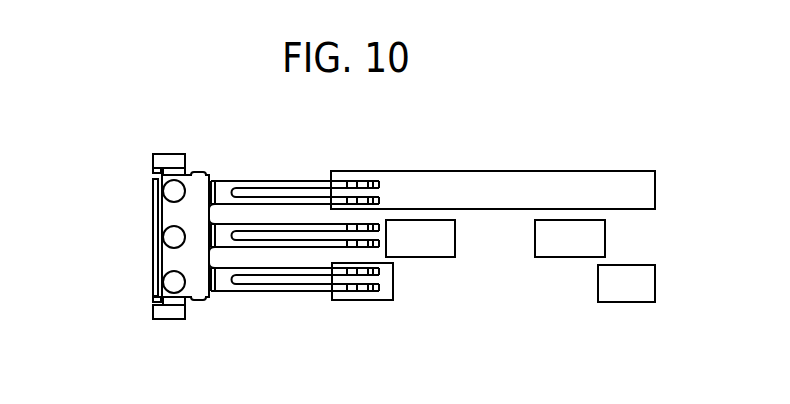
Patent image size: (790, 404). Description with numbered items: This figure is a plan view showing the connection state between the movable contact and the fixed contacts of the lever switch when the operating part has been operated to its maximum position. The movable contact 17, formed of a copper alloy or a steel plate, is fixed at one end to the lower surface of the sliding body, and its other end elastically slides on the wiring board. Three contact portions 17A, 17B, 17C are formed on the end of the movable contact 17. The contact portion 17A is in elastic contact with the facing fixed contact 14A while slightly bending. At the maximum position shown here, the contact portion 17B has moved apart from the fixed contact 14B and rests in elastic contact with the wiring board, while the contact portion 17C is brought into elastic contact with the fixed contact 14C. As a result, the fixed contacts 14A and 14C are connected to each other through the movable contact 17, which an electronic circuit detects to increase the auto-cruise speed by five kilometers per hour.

The movable contact 17 is at (153, 220).
The contact portion 17A is at (311, 186).
The contact portion 17B is at (316, 243).
The contact portion 17C is at (365, 285).
The fixed contact 14A is at (498, 185).
The fixed contact 14B is at (437, 257).
The fixed contact 14C is at (393, 290).